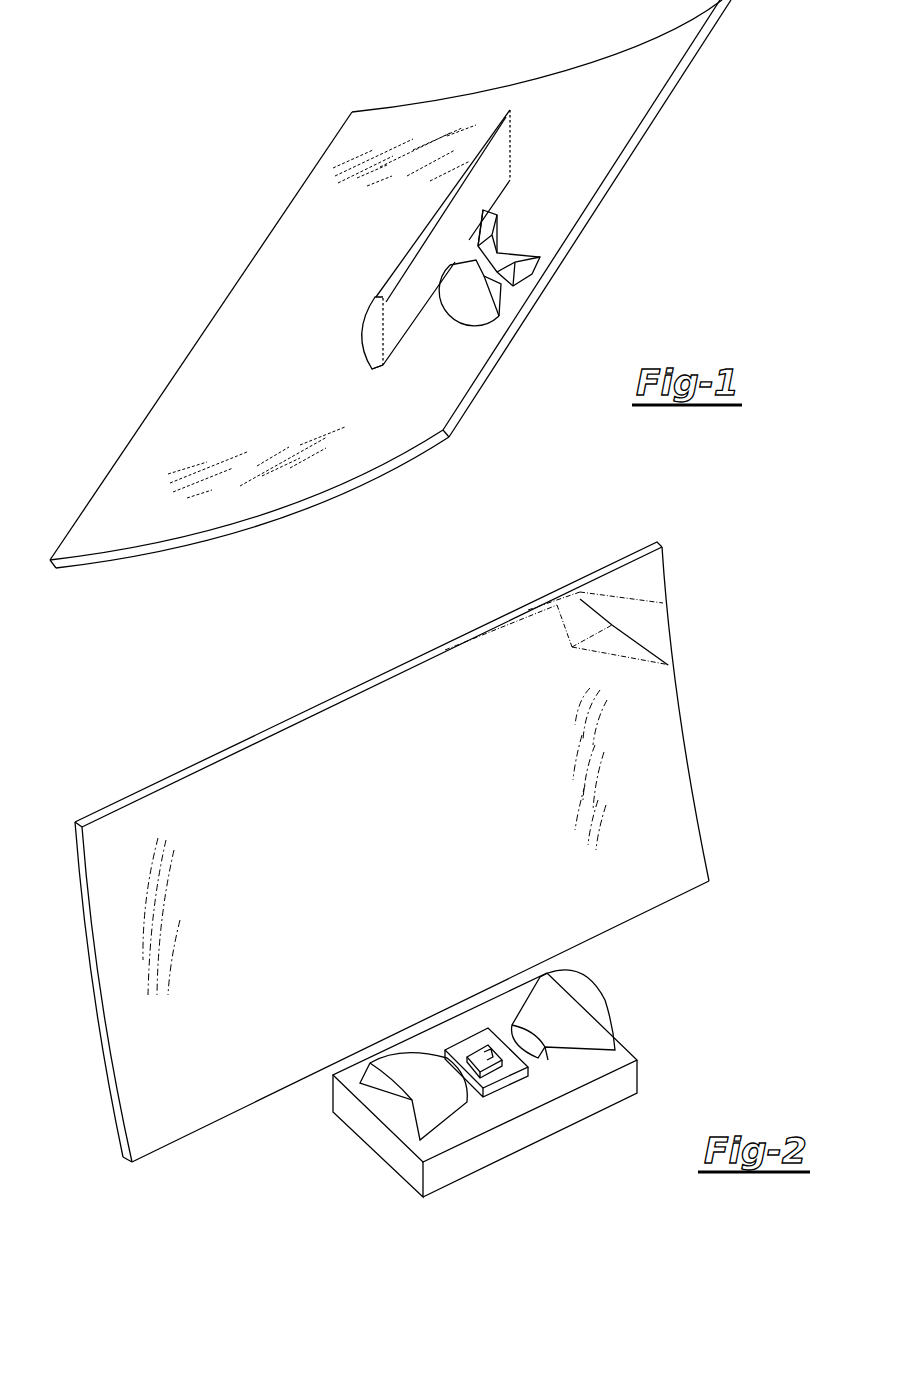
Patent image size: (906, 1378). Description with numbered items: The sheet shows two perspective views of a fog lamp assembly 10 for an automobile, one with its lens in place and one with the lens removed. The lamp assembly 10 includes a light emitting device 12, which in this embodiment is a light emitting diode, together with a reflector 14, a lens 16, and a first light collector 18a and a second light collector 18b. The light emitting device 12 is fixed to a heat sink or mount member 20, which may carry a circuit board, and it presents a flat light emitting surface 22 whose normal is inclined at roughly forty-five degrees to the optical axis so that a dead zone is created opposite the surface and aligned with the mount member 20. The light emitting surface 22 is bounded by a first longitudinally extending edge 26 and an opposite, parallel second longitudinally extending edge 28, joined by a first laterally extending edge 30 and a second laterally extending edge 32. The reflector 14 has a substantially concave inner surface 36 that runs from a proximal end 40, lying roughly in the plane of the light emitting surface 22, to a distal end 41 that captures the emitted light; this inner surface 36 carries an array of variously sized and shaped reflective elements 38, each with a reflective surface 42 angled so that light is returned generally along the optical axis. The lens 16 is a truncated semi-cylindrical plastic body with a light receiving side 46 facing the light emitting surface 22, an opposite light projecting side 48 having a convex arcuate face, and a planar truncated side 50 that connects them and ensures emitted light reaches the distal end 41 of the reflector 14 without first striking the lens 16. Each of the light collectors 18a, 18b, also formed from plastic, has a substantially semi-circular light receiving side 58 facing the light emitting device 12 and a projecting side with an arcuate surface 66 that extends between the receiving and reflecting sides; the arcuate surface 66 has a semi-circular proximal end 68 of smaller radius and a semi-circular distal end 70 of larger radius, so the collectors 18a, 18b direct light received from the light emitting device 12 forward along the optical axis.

In FIG. 1, the lamp assembly 10 is at (418, 284).
In FIG. 2, the light emitting device 12 is at (505, 1071).
In FIG. 1, the reflector 14 is at (418, 284).
In FIG. 2, the reflector 14 is at (382, 852).
In FIG. 1, the lens 16 is at (431, 272).
In FIG. 1, the first light collector 18a is at (463, 330).
In FIG. 2, the first light collector 18a is at (368, 1058).
In FIG. 1, the second light collector 18b is at (530, 240).
In FIG. 2, the second light collector 18b is at (585, 969).
In FIG. 2, the mount member 20 is at (400, 1177).
In FIG. 2, the light emitting surface 22 is at (493, 1072).
In FIG. 2, the first longitudinally extending edge 26 is at (470, 1040).
In FIG. 2, the second longitudinally extending edge 28 is at (486, 1092).
In FIG. 2, the first laterally extending edge 30 is at (463, 1078).
In FIG. 2, the second laterally extending edge 32 is at (500, 1052).
In FIG. 1, the inner surface 36 is at (240, 401).
In FIG. 2, the inner surface 36 is at (387, 813).
In FIG. 2, the reflective elements 38 is at (548, 617).
In FIG. 1, the proximal end 40 is at (703, 50).
In FIG. 2, the proximal end 40 is at (160, 1148).
In FIG. 1, the distal end 41 is at (126, 445).
In FIG. 2, the distal end 41 is at (143, 787).
In FIG. 2, the reflective surface 42 is at (628, 591).
In FIG. 1, the light receiving side 46 is at (492, 148).
In FIG. 1, the light projecting side 48 is at (355, 343).
In FIG. 1, the truncated side 50 is at (373, 371).
In FIG. 2, the light receiving side 58 is at (533, 1043).
In FIG. 2, the arcuate surface 66 is at (417, 1091).
In FIG. 2, the proximal end 68 is at (543, 1050).
In FIG. 2, the distal end 70 is at (407, 1112).